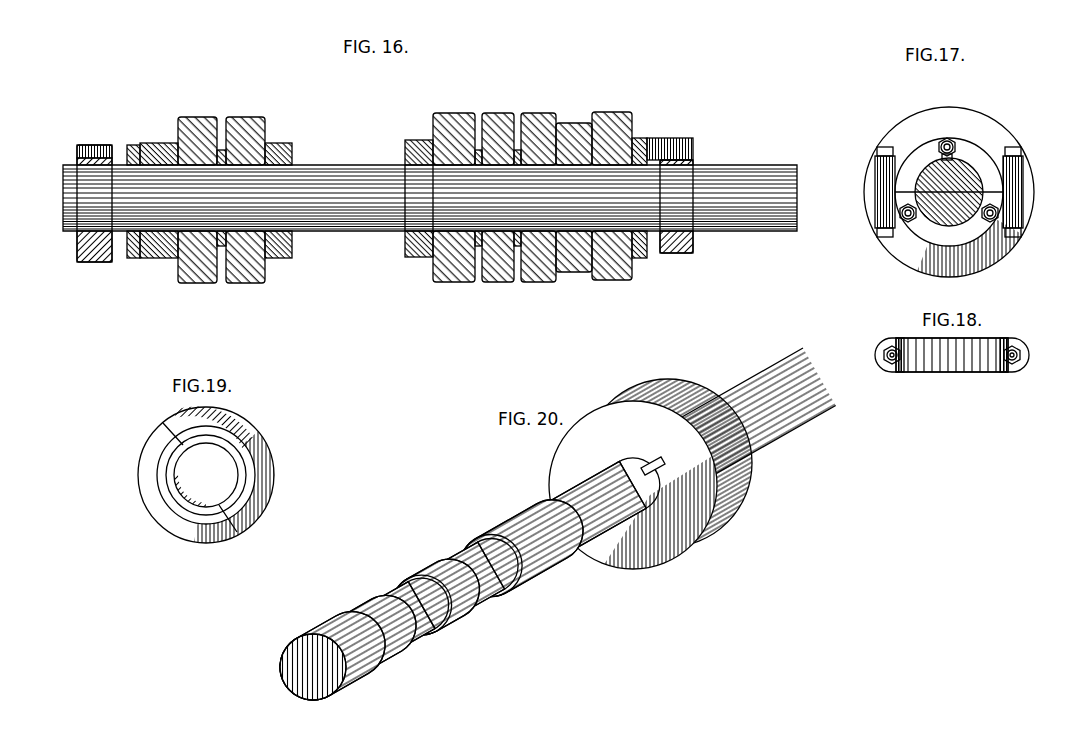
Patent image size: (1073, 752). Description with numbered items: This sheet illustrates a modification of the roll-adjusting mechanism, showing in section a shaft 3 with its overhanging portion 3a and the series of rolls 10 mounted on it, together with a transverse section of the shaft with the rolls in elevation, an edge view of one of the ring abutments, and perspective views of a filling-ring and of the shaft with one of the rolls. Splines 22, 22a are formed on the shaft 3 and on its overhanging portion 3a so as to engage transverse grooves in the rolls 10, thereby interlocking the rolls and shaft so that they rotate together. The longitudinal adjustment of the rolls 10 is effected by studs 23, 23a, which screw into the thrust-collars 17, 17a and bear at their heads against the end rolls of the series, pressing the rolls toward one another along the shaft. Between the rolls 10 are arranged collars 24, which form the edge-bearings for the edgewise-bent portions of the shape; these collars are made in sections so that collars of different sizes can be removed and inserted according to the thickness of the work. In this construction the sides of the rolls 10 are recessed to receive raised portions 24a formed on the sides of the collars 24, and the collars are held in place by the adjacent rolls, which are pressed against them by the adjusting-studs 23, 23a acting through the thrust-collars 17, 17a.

In FIG. 16, the shaft 3 is at (608, 198).
In FIG. 17, the shaft 3 is at (949, 192).
In FIG. 20, the shaft 3 is at (757, 374).
In FIG. 16, the overhanging portion of the shaft 3a is at (241, 198).
In FIG. 20, the overhanging portion of the shaft 3a is at (472, 578).
In FIG. 16, the roll 10 is at (192, 118).
In FIG. 17, the roll 10 is at (948, 112).
In FIG. 20, the roll 10 is at (650, 474).
In FIG. 16, the thrust-collar 17 is at (680, 253).
In FIG. 17, the thrust-collar 17 is at (949, 198).
In FIG. 18, the thrust-collar 17 is at (955, 368).
In FIG. 16, the thrust-collar 17a is at (90, 258).
In FIG. 16, the spline 22 is at (410, 165).
In FIG. 20, the spline 22 is at (773, 405).
In FIG. 16, the spline 22a is at (292, 160).
In FIG. 20, the spline 22a is at (440, 598).
In FIG. 16, the stud 23 is at (652, 138).
In FIG. 17, the stud 23 is at (956, 150).
In FIG. 16, the stud 23a is at (118, 150).
In FIG. 16, the collar 24 is at (221, 148).
In FIG. 19, the collar 24 is at (254, 426).
In FIG. 19, the raised portion 24a is at (166, 496).